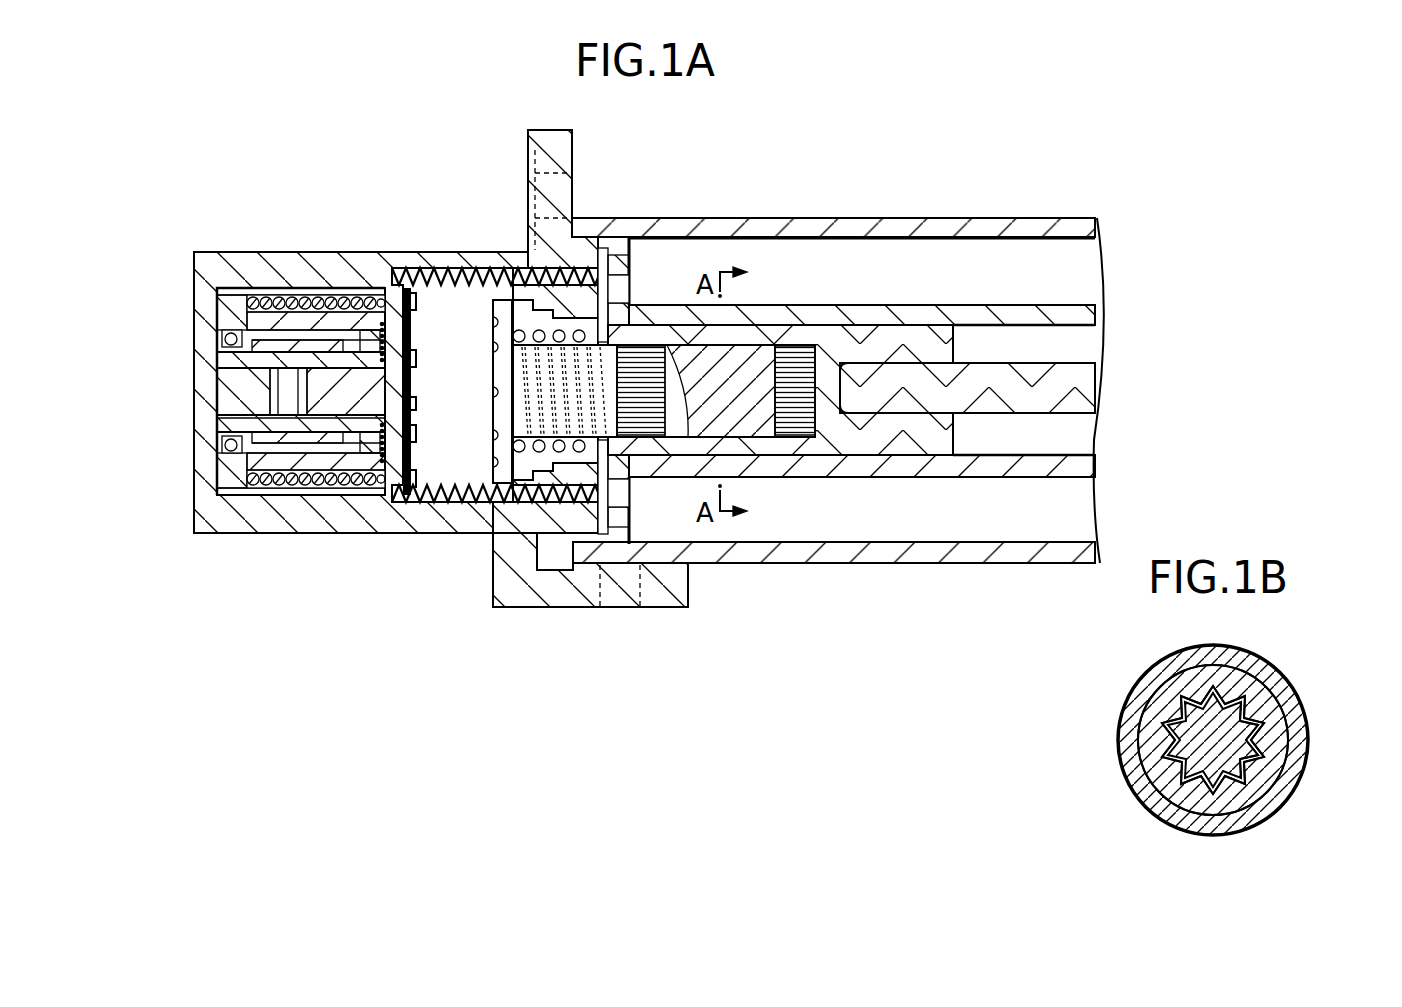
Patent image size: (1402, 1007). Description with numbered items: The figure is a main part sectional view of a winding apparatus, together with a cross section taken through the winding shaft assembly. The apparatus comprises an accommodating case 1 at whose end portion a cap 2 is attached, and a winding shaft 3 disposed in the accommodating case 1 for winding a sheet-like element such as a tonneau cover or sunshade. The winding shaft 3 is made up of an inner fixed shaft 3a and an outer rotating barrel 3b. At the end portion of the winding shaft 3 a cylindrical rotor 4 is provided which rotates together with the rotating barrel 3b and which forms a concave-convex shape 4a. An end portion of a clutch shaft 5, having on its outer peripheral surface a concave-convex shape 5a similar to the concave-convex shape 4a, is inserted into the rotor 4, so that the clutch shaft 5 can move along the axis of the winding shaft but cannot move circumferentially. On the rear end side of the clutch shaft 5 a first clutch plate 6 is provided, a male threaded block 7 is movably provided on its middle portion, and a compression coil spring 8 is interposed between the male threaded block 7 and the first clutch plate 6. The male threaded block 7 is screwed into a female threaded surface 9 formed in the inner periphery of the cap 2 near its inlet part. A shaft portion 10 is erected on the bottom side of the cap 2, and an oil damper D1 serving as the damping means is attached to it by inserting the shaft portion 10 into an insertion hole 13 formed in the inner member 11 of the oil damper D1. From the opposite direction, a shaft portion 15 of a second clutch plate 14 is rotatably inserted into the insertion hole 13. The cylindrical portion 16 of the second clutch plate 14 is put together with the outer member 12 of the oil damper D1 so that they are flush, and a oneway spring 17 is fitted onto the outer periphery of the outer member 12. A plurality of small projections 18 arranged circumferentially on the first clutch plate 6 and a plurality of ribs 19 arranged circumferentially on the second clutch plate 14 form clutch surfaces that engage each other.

In FIG. 1A, the accommodating case 1 is at (1030, 222).
In FIG. 1A, the cap 2 is at (262, 527).
In FIG. 1A, the winding shaft 3 is at (887, 352).
In FIG. 1A, the inner fixed shaft 3a is at (1092, 396).
In FIG. 1A, the outer rotating barrel 3b is at (1094, 303).
In FIG. 1B, the outer rotating barrel 3b is at (1300, 708).
In FIG. 1A, the cylindrical rotor 4 is at (909, 447).
In FIG. 1B, the cylindrical rotor 4 is at (1176, 740).
In FIG. 1B, the concave-convex shape 4a is at (1150, 748).
In FIG. 1A, the clutch shaft 5 is at (716, 437).
In FIG. 1B, the clutch shaft 5 is at (1215, 792).
In FIG. 1A, the concave-convex shape 5a is at (796, 428).
In FIG. 1B, the concave-convex shape 5a is at (1243, 807).
In FIG. 1A, the first clutch plate 6 is at (503, 473).
In FIG. 1A, the male threaded block 7 is at (557, 492).
In FIG. 1A, the compression coil spring 8 is at (560, 337).
In FIG. 1A, the female threaded surface 9 is at (433, 505).
In FIG. 1A, the shaft portion 10 is at (205, 404).
In FIG. 1A, the inner member 11 is at (218, 432).
In FIG. 1A, the outer member 12 is at (228, 292).
In FIG. 1A, the insertion hole 13 is at (221, 350).
In FIG. 1A, the second clutch plate 14 is at (388, 490).
In FIG. 1A, the shaft portion 15 is at (325, 408).
In FIG. 1A, the cylindrical portion 16 is at (328, 308).
In FIG. 1A, the oneway spring 17 is at (268, 300).
In FIG. 1A, the small projections 18 is at (478, 445).
In FIG. 1A, the ribs 19 is at (413, 320).
In FIG. 1A, the oil damper D1 is at (341, 289).